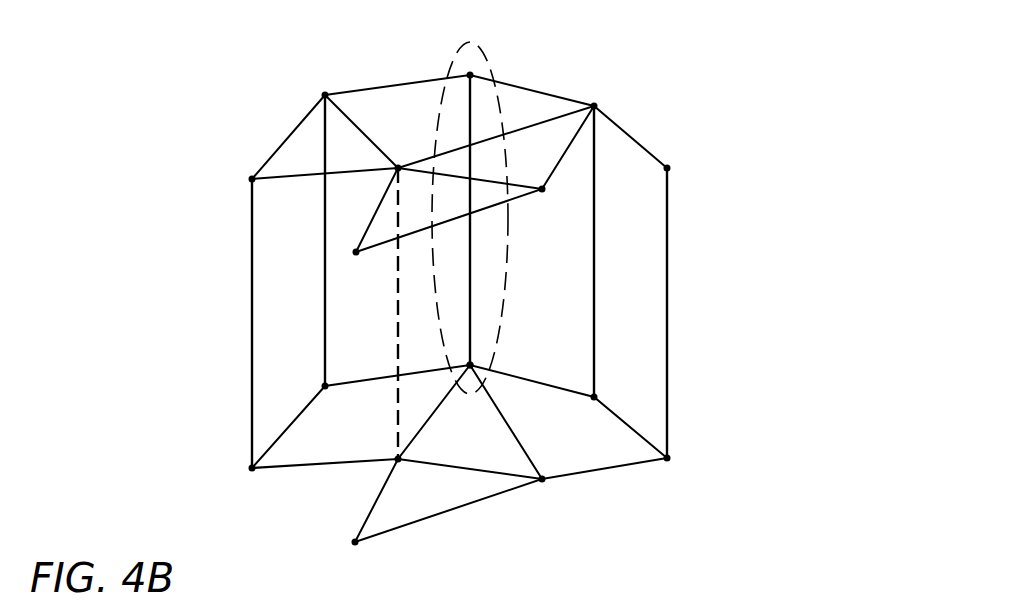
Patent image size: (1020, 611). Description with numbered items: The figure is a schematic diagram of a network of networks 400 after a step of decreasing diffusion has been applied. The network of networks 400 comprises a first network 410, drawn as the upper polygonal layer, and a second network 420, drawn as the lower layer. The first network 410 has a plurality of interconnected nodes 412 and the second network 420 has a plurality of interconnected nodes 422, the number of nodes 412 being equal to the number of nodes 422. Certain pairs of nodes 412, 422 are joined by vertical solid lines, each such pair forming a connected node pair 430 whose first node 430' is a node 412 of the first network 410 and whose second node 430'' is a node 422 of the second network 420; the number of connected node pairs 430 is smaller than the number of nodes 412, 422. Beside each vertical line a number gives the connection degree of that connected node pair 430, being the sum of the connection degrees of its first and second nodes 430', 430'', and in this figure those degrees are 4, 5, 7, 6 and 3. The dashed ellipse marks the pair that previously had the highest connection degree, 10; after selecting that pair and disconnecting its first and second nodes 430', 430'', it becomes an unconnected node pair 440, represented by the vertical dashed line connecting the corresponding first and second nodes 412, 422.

The network of networks 400 is at (708, 65).
The first network 410 is at (252, 107).
The interconnected nodes of the first network 412 is at (325, 95).
The second network 420 is at (637, 512).
The interconnected nodes of the second network 422 is at (252, 468).
The connected node pair 430 is at (536, 283).
The first node 430' is at (528, 207).
The second node 430'' is at (543, 455).
The unconnected node pair 440 is at (387, 397).
The connection degree 3 is at (676, 313).
The connection degree 4 is at (261, 323).
The connection degree 5 is at (334, 240).
The connection degree 6 is at (602, 251).
The connection degree 7 is at (479, 220).
The connection degree 10 is at (414, 313).